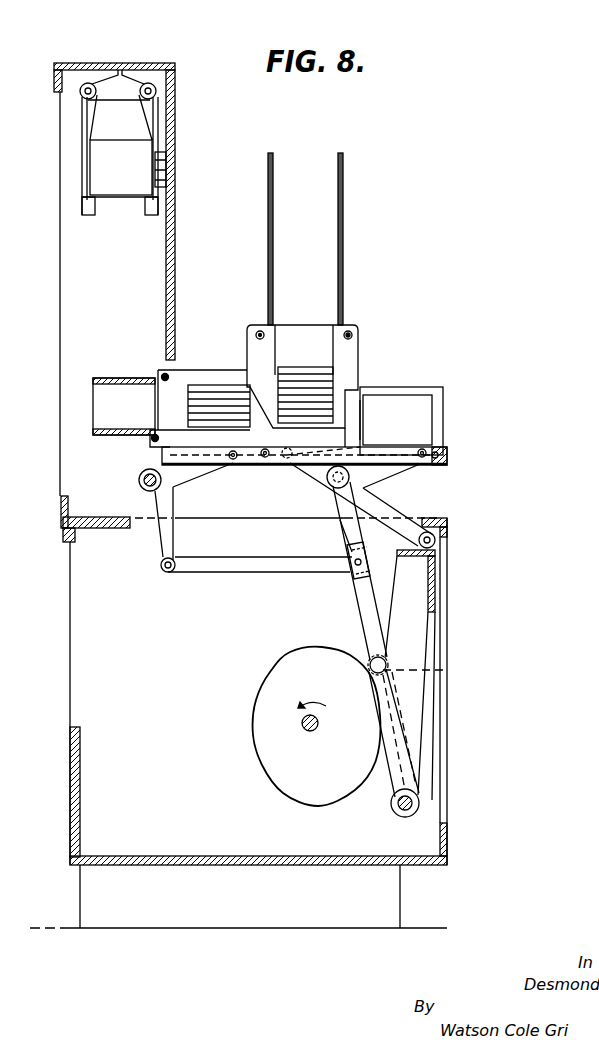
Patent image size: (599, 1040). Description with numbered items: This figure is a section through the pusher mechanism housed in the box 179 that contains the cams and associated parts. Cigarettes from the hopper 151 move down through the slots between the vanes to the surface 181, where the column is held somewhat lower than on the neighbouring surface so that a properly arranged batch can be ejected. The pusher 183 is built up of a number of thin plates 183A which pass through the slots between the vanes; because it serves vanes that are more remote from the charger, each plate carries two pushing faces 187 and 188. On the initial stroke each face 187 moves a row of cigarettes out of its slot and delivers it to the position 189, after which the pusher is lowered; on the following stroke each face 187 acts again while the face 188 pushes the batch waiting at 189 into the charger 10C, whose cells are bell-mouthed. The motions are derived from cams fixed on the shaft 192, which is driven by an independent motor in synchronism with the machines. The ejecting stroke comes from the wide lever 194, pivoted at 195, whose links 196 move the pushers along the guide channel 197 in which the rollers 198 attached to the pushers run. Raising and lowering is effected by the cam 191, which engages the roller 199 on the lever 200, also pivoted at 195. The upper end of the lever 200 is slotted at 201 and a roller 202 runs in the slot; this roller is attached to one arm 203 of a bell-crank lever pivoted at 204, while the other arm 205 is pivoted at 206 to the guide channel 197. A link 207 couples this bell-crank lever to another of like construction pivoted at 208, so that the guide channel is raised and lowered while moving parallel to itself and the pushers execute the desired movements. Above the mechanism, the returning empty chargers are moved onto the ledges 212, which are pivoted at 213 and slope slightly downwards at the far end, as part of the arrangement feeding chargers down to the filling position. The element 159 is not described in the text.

The charger 10C is at (114, 158).
The hopper 151 is at (297, 170).
The head block 159 is at (305, 338).
The box 179 is at (276, 638).
The surface 181 is at (340, 423).
The pusher 183 is at (425, 390).
The plate 183A is at (358, 400).
The pushing face 187 is at (352, 378).
The pushing face 188 is at (238, 368).
The position 189 is at (203, 385).
The cam 191 is at (338, 668).
The shaft 192 is at (313, 728).
The lever 194 is at (422, 633).
The pivot 195 is at (392, 818).
The link 196 is at (395, 505).
The guide channel 197 is at (440, 452).
The roller 198 is at (447, 460).
The roller 199 is at (448, 666).
The lever 200 is at (373, 610).
The slot 201 is at (347, 549).
The roller 202 is at (355, 582).
The arm 203 is at (280, 514).
The pivot 204 is at (328, 483).
The arm 205 is at (390, 470).
The pivot 206 is at (397, 421).
The link 207 is at (258, 570).
The pivot 208 is at (139, 482).
The ledge 212 is at (142, 208).
The pivot 213 is at (122, 70).